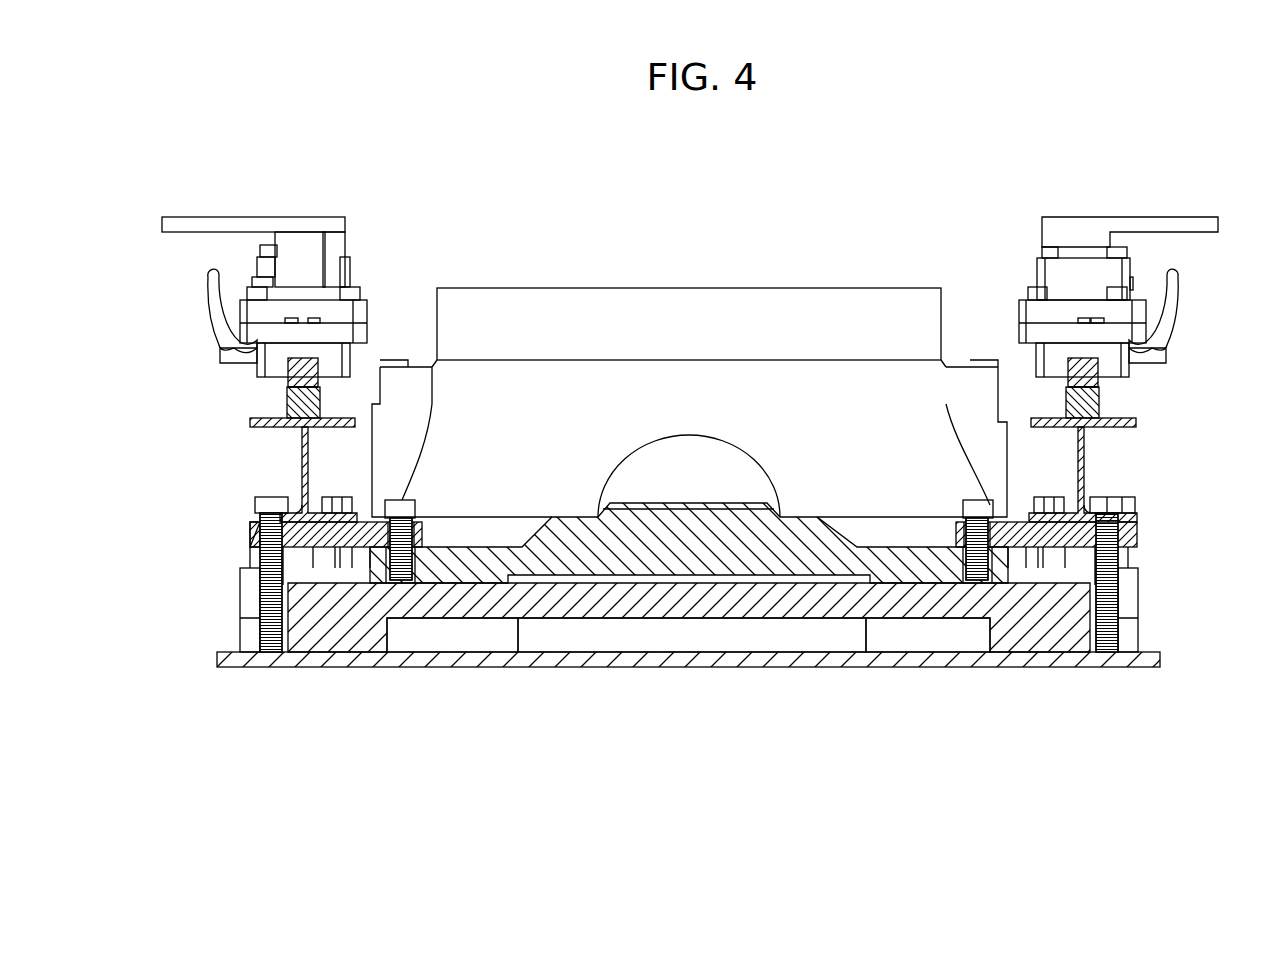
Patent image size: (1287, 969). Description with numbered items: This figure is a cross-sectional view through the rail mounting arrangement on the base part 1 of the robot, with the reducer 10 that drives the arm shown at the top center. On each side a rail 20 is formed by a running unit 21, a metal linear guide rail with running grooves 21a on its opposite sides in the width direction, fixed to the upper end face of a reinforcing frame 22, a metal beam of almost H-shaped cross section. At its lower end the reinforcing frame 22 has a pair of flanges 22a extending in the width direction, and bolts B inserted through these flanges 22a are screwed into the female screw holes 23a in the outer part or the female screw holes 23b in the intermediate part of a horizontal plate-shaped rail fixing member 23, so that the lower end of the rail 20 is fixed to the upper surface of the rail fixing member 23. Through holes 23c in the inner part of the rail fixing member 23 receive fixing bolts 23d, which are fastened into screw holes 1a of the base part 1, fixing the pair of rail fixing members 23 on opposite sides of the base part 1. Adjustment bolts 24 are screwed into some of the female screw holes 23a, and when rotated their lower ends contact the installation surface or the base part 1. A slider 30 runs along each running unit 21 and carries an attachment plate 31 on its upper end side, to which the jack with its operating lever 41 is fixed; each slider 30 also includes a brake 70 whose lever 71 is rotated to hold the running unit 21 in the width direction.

The base part 1 is at (802, 506).
The screw hole 1a is at (398, 560).
The reducer 10 is at (652, 287).
The rail 20 is at (276, 400).
The running unit 21 is at (290, 378).
The running groove 21a is at (1072, 378).
The reinforcing frame 22 is at (255, 422).
The flange 22a is at (297, 516).
The rail fixing member 23 is at (250, 540).
The female screw hole 23a is at (252, 532).
The female screw hole 23b is at (337, 555).
The through hole 23c is at (414, 540).
The fixing bolt 23d is at (400, 500).
The adjustment bolt 24 is at (255, 503).
The slider 30 is at (378, 306).
The attachment plate 31 is at (347, 308).
The operating lever 41 is at (225, 217).
The brake 70 is at (192, 284).
The lever 71 is at (226, 312).
The bolt B is at (338, 497).